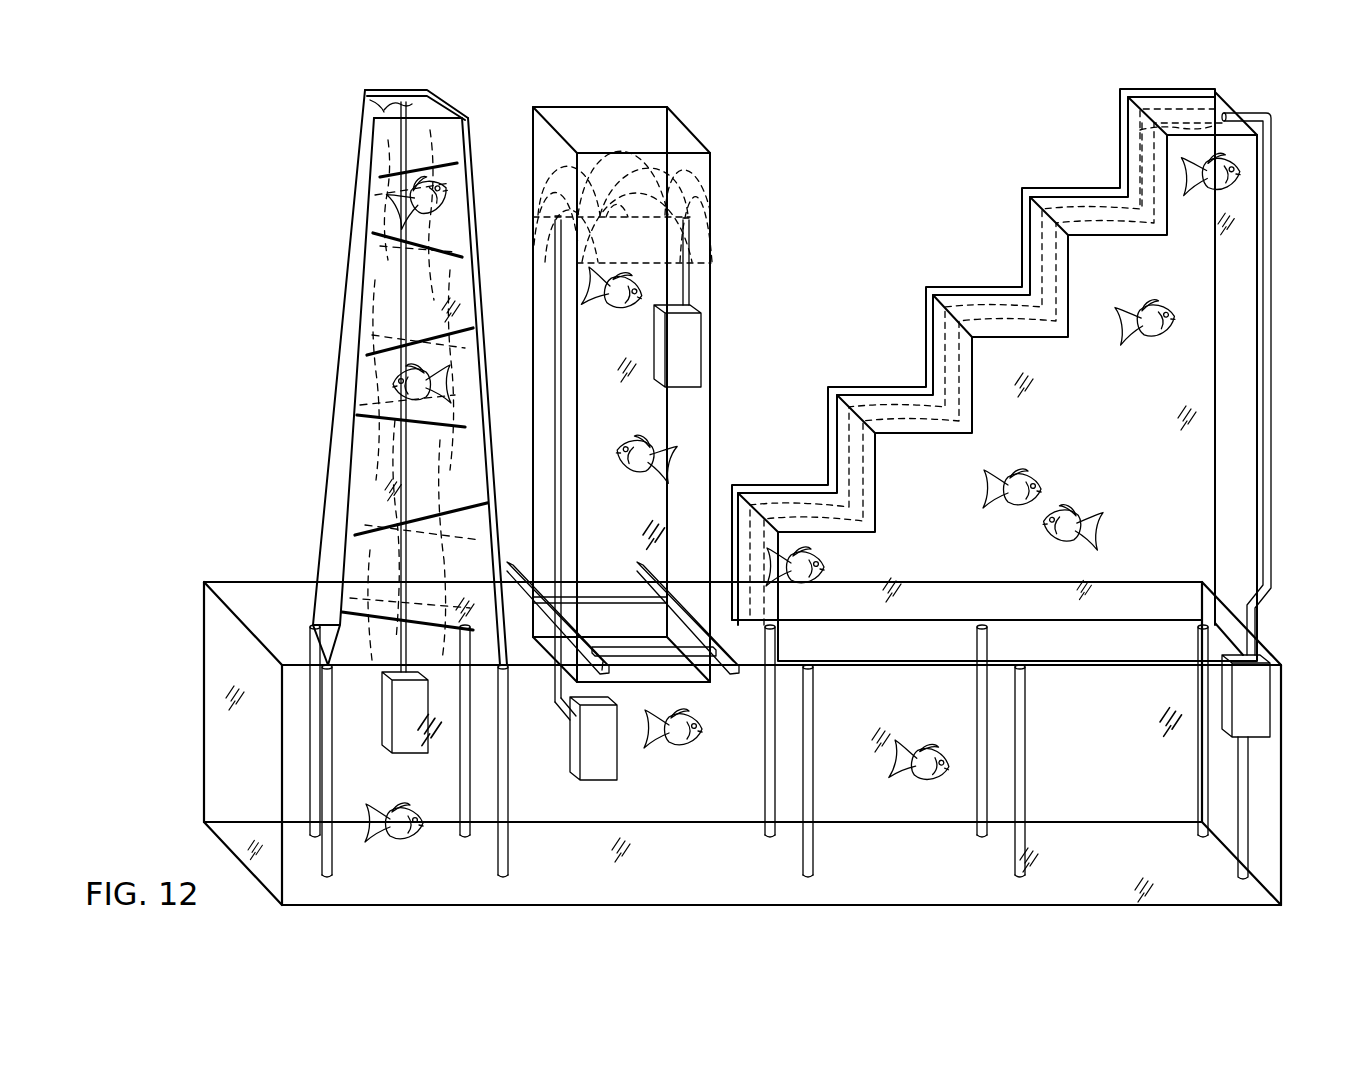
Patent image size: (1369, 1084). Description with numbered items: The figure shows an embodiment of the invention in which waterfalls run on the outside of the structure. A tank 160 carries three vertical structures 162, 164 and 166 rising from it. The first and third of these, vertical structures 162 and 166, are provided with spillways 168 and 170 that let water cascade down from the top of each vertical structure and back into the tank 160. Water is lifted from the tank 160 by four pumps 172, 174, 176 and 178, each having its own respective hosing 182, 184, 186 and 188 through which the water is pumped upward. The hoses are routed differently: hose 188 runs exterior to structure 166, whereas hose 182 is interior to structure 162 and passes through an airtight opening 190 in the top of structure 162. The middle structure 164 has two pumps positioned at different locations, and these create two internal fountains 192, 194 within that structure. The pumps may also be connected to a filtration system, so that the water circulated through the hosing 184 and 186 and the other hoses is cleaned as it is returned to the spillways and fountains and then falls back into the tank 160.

The tank 160 is at (683, 877).
The vertical structure 162 is at (355, 200).
The vertical structure 164 is at (712, 413).
The vertical structure 166 is at (1089, 452).
The spillway 168 is at (384, 352).
The spillway 170 is at (1050, 207).
The pump 172 is at (425, 726).
The pump 174 is at (614, 751).
The pump 176 is at (698, 360).
The pump 178 is at (1267, 708).
The hose 182 is at (405, 463).
The hose 184 is at (560, 272).
The hose 186 is at (688, 270).
The hose 188 is at (1267, 260).
The airtight opening 190 is at (372, 113).
The internal fountain 192 is at (688, 190).
The internal fountain 194 is at (555, 195).